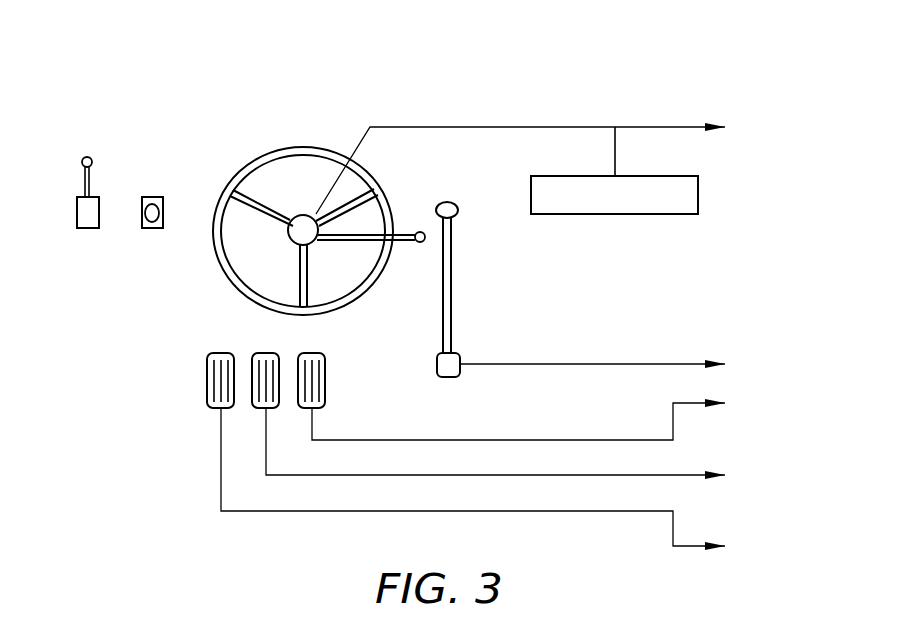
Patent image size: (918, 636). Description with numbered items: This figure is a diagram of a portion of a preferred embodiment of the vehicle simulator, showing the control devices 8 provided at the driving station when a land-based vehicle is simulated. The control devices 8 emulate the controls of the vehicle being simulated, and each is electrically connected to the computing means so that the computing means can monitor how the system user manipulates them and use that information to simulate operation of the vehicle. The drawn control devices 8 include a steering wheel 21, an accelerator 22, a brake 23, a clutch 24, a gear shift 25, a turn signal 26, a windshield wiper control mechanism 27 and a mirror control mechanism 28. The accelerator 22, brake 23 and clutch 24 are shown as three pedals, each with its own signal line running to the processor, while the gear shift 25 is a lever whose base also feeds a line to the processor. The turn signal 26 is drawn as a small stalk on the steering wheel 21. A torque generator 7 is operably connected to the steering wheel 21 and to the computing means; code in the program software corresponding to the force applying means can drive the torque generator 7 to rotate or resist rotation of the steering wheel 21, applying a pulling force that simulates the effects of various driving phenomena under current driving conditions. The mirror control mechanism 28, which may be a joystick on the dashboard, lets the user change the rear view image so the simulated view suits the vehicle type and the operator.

The control devices 8 is at (248, 96).
The steering wheel 21 is at (262, 157).
The turn signal 26 is at (423, 243).
The gear shift 25 is at (452, 296).
The torque generator 7 is at (605, 214).
The accelerator 22 is at (313, 353).
The brake 23 is at (267, 353).
The clutch 24 is at (210, 353).
The windshield wiper control mechanism 27 is at (155, 197).
The mirror control mechanism 28 is at (84, 158).